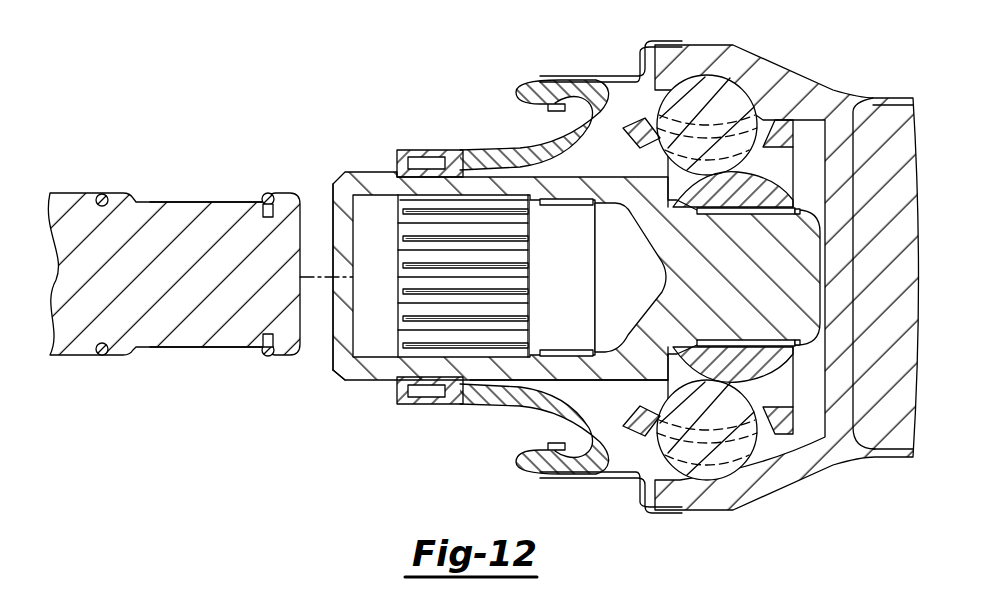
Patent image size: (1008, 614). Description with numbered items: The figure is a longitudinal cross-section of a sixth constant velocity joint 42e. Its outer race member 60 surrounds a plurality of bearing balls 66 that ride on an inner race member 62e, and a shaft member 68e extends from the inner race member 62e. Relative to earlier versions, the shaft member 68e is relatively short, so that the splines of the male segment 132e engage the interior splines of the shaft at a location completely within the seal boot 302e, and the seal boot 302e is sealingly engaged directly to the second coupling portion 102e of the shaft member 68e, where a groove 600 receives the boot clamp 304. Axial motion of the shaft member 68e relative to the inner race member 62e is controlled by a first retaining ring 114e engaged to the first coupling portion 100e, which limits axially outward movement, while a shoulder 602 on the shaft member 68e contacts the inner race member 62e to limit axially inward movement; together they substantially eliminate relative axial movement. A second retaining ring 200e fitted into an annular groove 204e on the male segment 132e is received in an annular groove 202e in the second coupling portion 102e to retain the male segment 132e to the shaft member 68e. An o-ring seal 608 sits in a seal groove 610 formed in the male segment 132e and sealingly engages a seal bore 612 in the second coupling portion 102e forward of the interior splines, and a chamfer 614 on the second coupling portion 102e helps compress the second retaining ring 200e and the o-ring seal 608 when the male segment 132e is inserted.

The constant velocity joint 42e is at (739, 44).
The male segment 132e is at (84, 194).
The second coupling portion 102e is at (375, 172).
The seal boot 302e is at (551, 147).
The bearing balls 66 is at (681, 183).
The inner race member 62e is at (779, 200).
The shoulder 602 is at (668, 180).
The first coupling portion 100e is at (780, 230).
The seal bore 612 is at (386, 198).
The chamfer 614 is at (346, 360).
The shaft member 68e is at (690, 305).
The first retaining ring 114e is at (795, 338).
The seal groove 610 is at (117, 343).
The annular groove 204e is at (264, 341).
The o-ring seal 608 is at (104, 358).
The second retaining ring 200e is at (268, 360).
The groove 600 is at (420, 368).
The annular groove 202e is at (535, 372).
The boot clamp 304 is at (437, 402).
The outer race member 60 is at (790, 480).